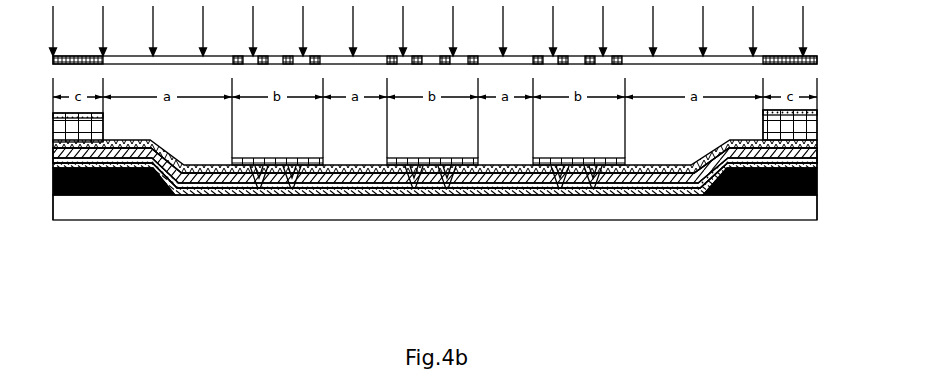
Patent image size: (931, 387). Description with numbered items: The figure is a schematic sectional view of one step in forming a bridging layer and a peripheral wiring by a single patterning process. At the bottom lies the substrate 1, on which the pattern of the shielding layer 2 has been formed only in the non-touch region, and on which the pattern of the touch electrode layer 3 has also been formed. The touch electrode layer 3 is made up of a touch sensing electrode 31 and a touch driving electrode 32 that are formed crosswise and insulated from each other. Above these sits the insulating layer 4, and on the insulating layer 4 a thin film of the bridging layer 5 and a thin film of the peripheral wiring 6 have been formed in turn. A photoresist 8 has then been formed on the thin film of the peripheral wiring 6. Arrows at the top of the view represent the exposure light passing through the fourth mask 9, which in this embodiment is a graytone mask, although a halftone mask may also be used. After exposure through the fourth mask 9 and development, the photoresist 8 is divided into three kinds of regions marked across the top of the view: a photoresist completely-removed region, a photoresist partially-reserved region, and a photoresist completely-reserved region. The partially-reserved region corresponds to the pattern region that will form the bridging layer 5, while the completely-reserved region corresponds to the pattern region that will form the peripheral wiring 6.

The substrate 1 is at (197, 210).
The shielding layer 2 is at (770, 195).
The touch electrode layer 3 is at (360, 268).
The touch sensing electrode 31 is at (309, 195).
The touch driving electrode 32 is at (281, 194).
The insulating layer 4 is at (356, 194).
The bridging layer 5 is at (287, 159).
The peripheral wiring 6 is at (125, 139).
The photoresist 8 is at (788, 127).
The fourth mask 9 is at (817, 61).